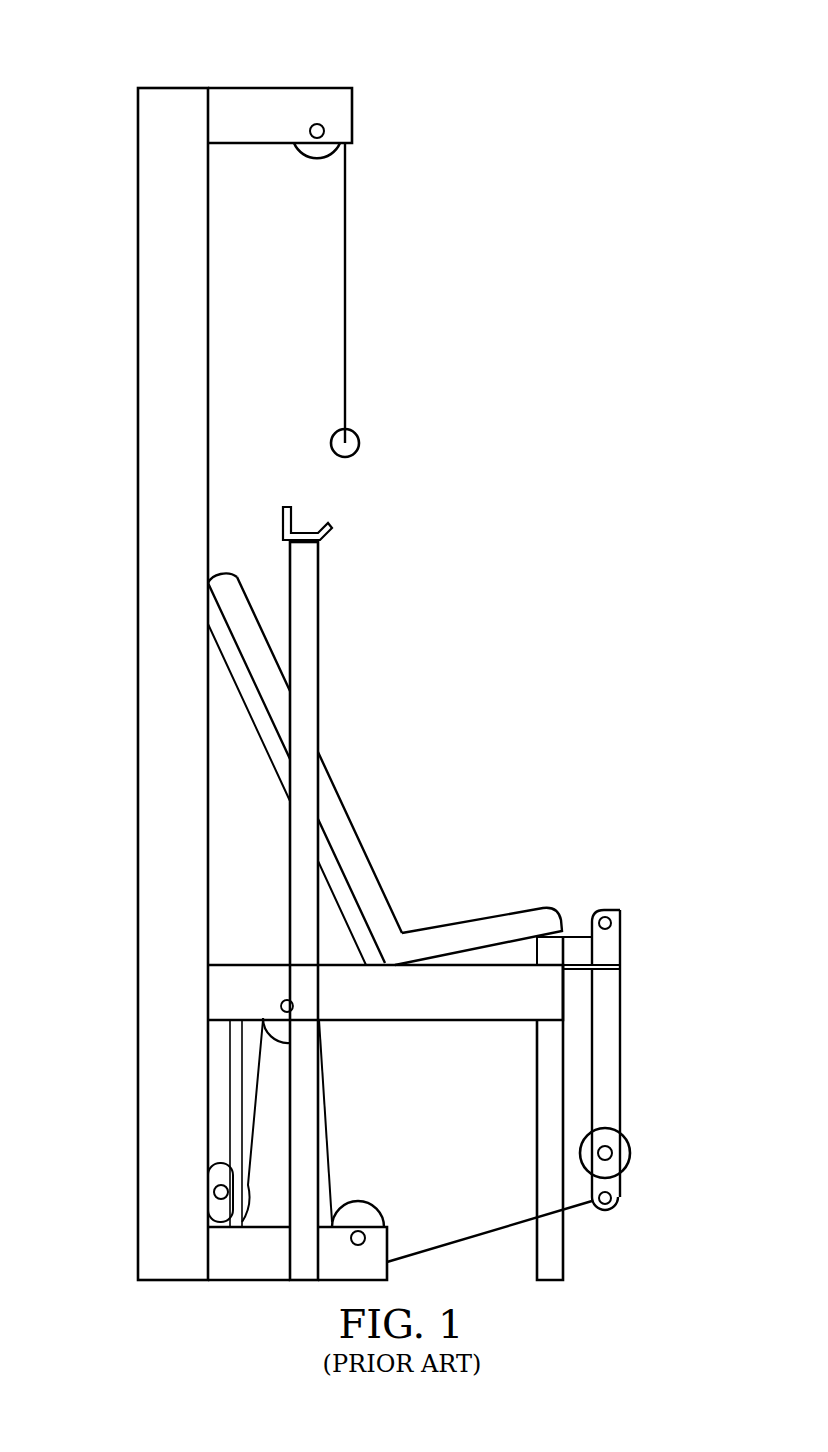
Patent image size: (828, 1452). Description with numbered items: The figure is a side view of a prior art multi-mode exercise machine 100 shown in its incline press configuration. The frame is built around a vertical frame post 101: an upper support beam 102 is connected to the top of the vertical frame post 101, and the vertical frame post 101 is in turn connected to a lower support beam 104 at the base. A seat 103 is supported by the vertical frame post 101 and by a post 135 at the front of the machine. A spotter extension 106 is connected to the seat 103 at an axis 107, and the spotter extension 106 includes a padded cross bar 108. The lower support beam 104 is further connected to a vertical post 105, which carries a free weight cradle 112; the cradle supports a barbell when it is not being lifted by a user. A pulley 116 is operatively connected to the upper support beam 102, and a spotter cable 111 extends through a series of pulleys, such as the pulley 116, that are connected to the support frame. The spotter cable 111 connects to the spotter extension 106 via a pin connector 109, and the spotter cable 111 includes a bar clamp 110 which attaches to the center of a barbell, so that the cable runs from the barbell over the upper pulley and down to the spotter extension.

The multi-mode exercise machine 100 is at (90, 66).
The vertical frame post 101 is at (138, 340).
The upper support beam 102 is at (275, 88).
The pulley 116 is at (306, 160).
The spotter cable 111 is at (347, 294).
The bar clamp 110 is at (359, 441).
The free weight cradle 112 is at (284, 507).
The vertical post 105 is at (320, 602).
The seat 103 is at (421, 1022).
The axis 107 is at (606, 916).
The spotter extension 106 is at (621, 1050).
The padded cross bar 108 is at (632, 1158).
The pin connector 109 is at (614, 1204).
The post 135 is at (565, 1246).
The lower support beam 104 is at (254, 1282).